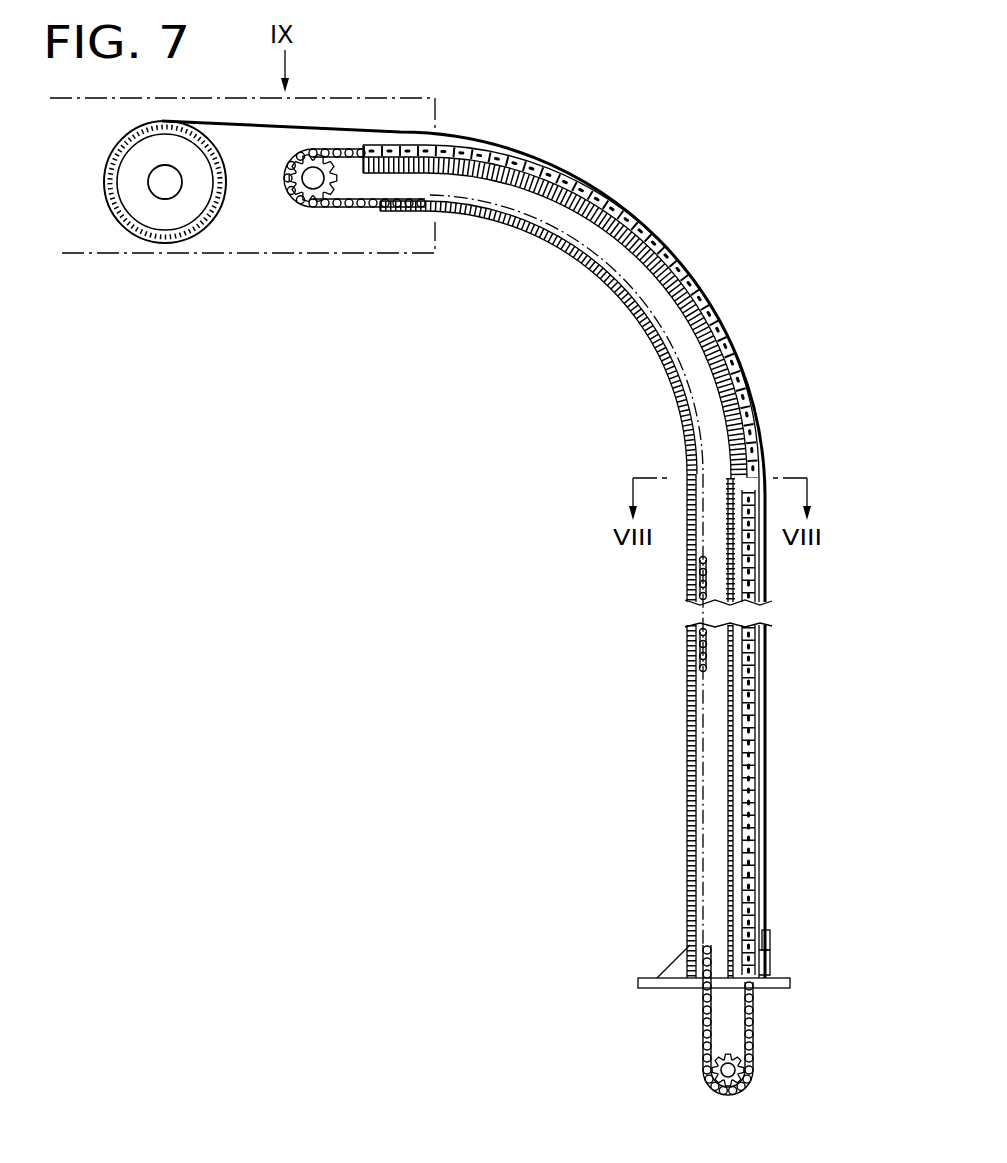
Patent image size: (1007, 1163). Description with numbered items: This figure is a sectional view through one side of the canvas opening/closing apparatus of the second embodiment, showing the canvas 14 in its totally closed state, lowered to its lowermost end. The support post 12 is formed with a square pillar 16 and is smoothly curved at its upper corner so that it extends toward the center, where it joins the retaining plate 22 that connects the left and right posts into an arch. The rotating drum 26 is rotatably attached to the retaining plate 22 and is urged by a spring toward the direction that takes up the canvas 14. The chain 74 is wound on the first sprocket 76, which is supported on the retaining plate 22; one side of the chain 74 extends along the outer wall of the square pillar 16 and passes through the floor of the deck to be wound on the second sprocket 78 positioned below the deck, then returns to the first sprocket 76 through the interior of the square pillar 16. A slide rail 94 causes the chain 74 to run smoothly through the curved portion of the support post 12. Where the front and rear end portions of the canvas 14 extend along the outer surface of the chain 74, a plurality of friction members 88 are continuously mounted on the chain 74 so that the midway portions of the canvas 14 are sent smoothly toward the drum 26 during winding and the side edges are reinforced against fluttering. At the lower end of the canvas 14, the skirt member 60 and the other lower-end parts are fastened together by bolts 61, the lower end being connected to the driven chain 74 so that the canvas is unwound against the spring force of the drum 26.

The support post 12 is at (668, 915).
The canvas 14 is at (678, 268).
The square pillar 16 is at (688, 670).
The retaining plate 22 is at (193, 255).
The rotating drum 26 is at (112, 204).
The skirt member 60 is at (768, 973).
The bolt 61 is at (768, 943).
The chain 74 is at (358, 204).
The first sprocket 76 is at (307, 204).
The second sprocket 78 is at (755, 1052).
The friction member 88 is at (760, 842).
The slide rail 94 is at (610, 313).